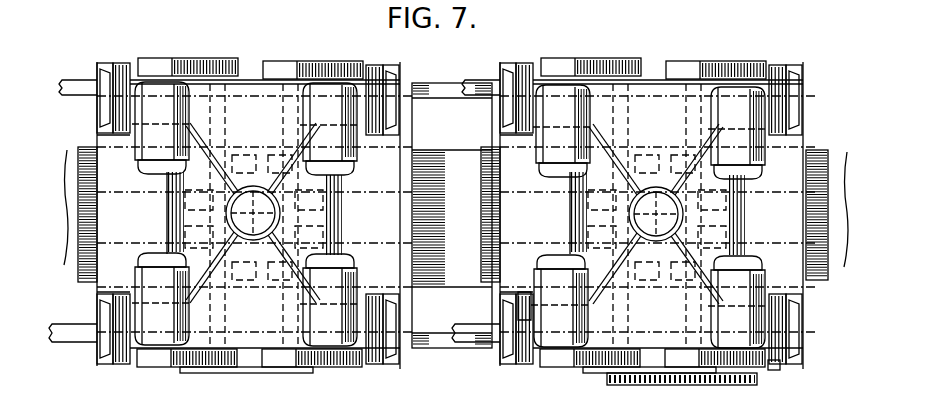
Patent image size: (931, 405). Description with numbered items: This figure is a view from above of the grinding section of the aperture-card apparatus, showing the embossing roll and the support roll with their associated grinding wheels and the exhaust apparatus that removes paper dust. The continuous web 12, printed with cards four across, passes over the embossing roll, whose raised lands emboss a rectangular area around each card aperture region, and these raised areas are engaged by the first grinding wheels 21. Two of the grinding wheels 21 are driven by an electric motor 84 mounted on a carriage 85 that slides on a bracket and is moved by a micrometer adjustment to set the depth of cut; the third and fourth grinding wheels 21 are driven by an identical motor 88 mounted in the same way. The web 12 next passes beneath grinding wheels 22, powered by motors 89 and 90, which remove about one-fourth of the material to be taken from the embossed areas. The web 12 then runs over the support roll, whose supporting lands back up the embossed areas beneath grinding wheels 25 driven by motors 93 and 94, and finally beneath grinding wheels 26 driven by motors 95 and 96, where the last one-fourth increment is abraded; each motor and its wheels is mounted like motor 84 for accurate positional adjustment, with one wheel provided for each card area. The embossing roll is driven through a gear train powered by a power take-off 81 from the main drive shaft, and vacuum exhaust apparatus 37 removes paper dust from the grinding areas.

The web 12 is at (70, 192).
The vacuum exhaust apparatus 37 is at (254, 187).
The grinding wheels 26 is at (200, 250).
The grinding wheels 25 is at (315, 190).
The grinding wheels 22 is at (562, 190).
The grinding wheels 21 is at (730, 200).
The motor 96 is at (186, 128).
The motor 94 is at (312, 140).
The motor 95 is at (185, 320).
The motor 93 is at (330, 320).
The motor 90 is at (563, 131).
The motor 88 is at (745, 105).
The motor 89 is at (585, 325).
The electric motor 84 is at (742, 332).
The power take-off 81 is at (708, 383).
The carriage 85 is at (775, 370).